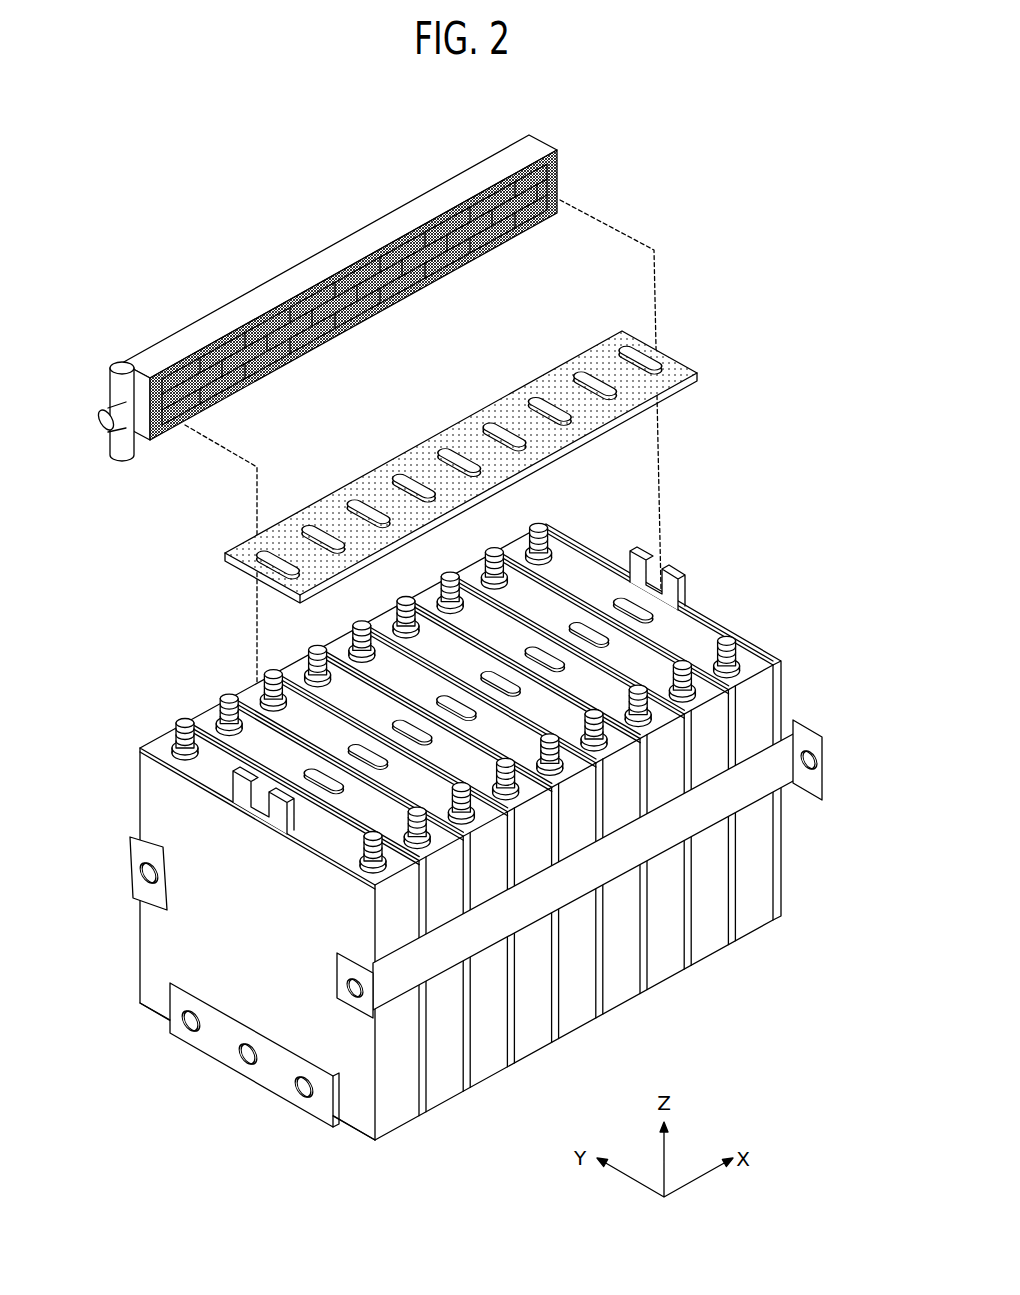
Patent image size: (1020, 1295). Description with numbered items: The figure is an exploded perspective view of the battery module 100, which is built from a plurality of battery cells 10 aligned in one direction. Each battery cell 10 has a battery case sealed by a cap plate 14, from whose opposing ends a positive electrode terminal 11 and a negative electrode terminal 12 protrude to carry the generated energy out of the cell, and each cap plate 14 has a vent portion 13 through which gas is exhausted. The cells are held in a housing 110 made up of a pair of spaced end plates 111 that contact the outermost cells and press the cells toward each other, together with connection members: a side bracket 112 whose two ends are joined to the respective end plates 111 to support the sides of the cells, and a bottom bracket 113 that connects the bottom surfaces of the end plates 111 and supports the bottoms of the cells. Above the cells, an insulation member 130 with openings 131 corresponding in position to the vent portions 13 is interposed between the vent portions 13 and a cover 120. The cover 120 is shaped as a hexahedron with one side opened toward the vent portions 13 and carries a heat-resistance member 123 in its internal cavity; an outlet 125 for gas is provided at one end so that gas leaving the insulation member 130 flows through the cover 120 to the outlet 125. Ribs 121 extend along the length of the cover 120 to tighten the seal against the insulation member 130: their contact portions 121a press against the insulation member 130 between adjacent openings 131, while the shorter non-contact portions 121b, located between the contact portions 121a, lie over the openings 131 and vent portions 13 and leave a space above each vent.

The battery cell 10 is at (710, 917).
The positive electrode terminal 11 is at (542, 532).
The negative electrode terminal 12 is at (742, 628).
The vent portion 13 is at (660, 600).
The cap plate 14 is at (758, 670).
The battery module 100 is at (311, 192).
The housing 110 is at (243, 1168).
The end plate 111 is at (176, 948).
The side bracket 112 is at (350, 1008).
The bottom bracket 113 is at (222, 1040).
The cover 120 is at (533, 138).
The rib 121 is at (517, 333).
The contact portion 121a is at (422, 290).
The non-contact portion 121b is at (445, 268).
The heat-resistance member 123 is at (520, 237).
The outlet 125 is at (110, 433).
The insulation member 130 is at (683, 367).
The opening 131 is at (647, 350).